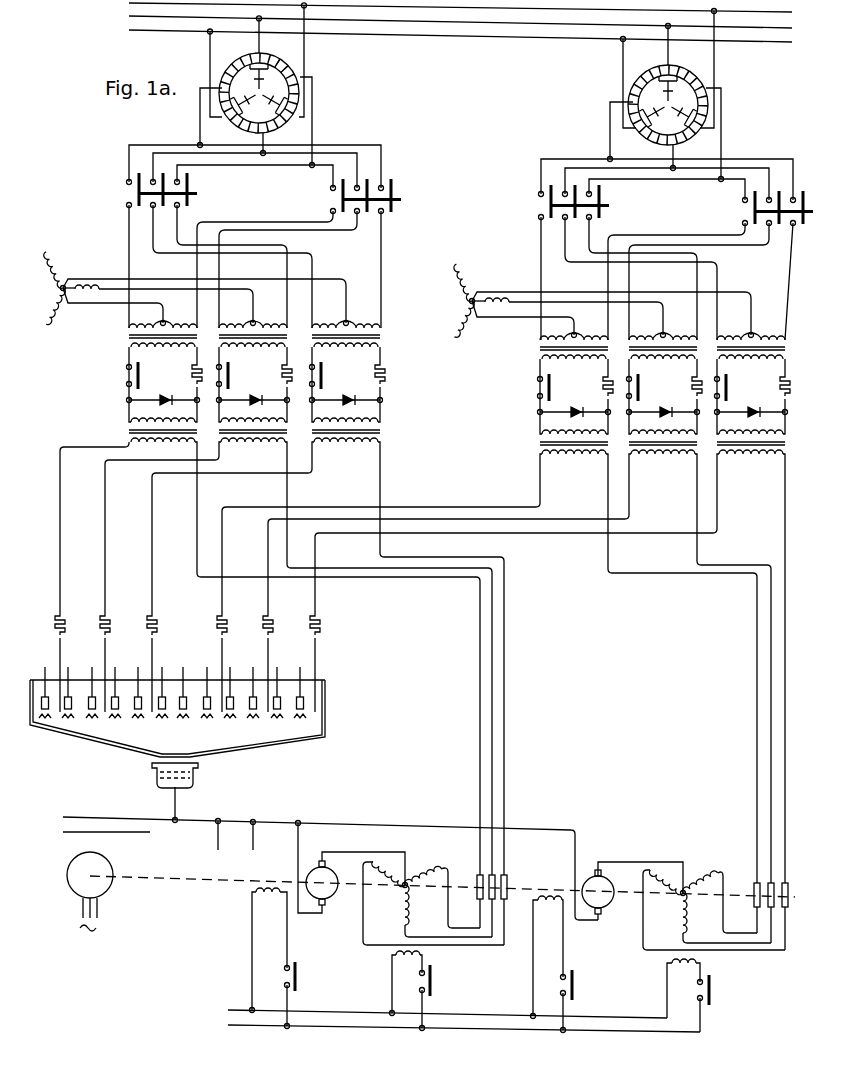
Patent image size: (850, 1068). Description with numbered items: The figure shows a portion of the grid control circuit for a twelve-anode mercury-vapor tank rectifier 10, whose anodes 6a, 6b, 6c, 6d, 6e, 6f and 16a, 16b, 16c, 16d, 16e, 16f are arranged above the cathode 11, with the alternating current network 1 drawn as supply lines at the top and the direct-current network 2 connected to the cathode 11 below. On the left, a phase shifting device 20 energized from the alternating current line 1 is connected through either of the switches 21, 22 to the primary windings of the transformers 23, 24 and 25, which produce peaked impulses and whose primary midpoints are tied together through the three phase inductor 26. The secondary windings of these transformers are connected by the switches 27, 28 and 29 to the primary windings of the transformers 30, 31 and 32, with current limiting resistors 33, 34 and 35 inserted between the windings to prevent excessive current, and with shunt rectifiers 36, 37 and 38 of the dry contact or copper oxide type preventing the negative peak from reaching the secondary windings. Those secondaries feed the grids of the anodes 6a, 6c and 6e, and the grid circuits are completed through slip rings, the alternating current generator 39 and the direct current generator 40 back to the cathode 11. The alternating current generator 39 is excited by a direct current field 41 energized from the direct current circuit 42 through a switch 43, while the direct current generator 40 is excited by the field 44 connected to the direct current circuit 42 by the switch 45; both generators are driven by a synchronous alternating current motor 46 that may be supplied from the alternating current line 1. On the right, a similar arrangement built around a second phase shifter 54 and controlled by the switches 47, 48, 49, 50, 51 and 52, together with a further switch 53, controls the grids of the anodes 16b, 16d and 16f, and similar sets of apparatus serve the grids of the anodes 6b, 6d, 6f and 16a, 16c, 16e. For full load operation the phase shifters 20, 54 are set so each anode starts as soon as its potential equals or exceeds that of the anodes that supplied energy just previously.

The alternating current network 1 is at (131, 1).
The direct-current network 2 is at (62, 814).
The mercury-vapor rectifier 10 is at (120, 752).
The cathode 11 is at (182, 786).
The phase shifting device 20 is at (282, 60).
The switch 21 is at (192, 192).
The switch 22 is at (393, 202).
The transformer 23 is at (128, 335).
The transformer 24 is at (220, 337).
The transformer 25 is at (308, 334).
The three phase inductor 26 is at (58, 287).
The switch 27 is at (141, 376).
The switch 28 is at (231, 376).
The switch 29 is at (324, 376).
The transformer 30 is at (126, 429).
The transformer 31 is at (218, 429).
The transformer 32 is at (311, 429).
The current limiting resistor 33 is at (194, 380).
The current limiting resistor 34 is at (284, 380).
The current limiting resistor 35 is at (377, 380).
The rectifier 36 is at (164, 399).
The rectifier 37 is at (254, 399).
The rectifier 38 is at (344, 399).
The alternating current generator 39 is at (410, 866).
The direct current generator 40 is at (334, 894).
The direct current field 41 is at (407, 959).
The direct current circuit 42 is at (227, 1007).
The switch 43 is at (437, 980).
The field 44 is at (270, 897).
The switch 45 is at (298, 978).
The synchronous alternating current motor 46 is at (68, 880).
The switch 47 is at (612, 207).
The switch 48 is at (809, 214).
The switch 49 is at (552, 386).
The switch 50 is at (643, 386).
The switch 51 is at (732, 386).
The switch 52 is at (715, 987).
The relay contact 53 is at (577, 984).
The phase shifter 54 is at (655, 72).
The anode 6a is at (43, 693).
The anode 6b is at (67, 693).
The anode 6c is at (91, 693).
The anode 6d is at (114, 693).
The anode 6e is at (137, 693).
The anode 6f is at (160, 693).
The anode 16a is at (182, 693).
The anode 16b is at (206, 693).
The anode 16c is at (229, 693).
The anode 16d is at (252, 693).
The anode 16e is at (276, 693).
The anode 16f is at (299, 693).